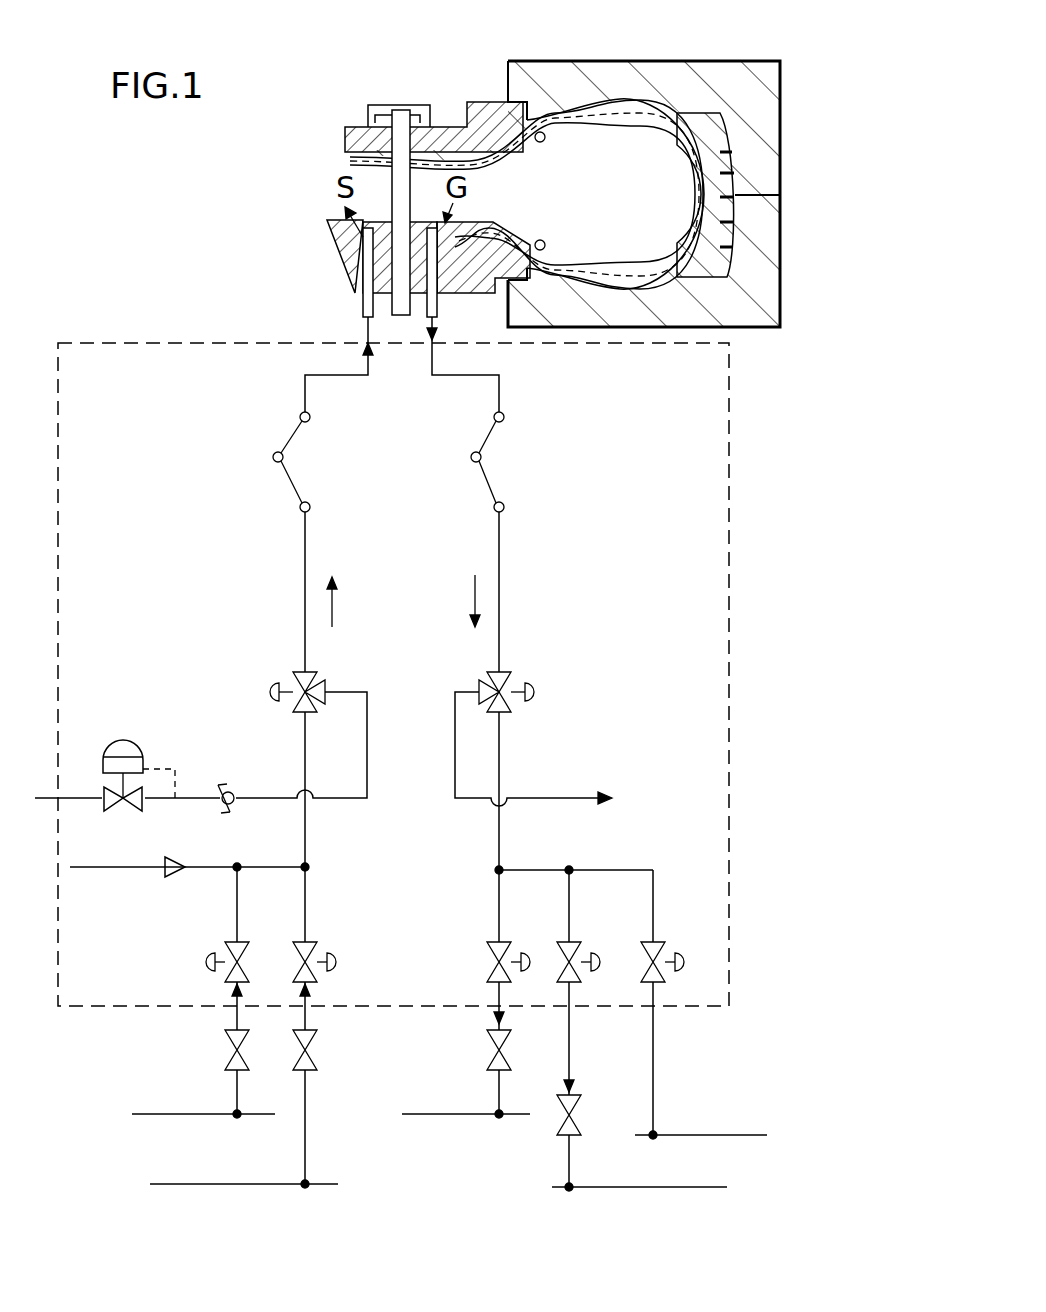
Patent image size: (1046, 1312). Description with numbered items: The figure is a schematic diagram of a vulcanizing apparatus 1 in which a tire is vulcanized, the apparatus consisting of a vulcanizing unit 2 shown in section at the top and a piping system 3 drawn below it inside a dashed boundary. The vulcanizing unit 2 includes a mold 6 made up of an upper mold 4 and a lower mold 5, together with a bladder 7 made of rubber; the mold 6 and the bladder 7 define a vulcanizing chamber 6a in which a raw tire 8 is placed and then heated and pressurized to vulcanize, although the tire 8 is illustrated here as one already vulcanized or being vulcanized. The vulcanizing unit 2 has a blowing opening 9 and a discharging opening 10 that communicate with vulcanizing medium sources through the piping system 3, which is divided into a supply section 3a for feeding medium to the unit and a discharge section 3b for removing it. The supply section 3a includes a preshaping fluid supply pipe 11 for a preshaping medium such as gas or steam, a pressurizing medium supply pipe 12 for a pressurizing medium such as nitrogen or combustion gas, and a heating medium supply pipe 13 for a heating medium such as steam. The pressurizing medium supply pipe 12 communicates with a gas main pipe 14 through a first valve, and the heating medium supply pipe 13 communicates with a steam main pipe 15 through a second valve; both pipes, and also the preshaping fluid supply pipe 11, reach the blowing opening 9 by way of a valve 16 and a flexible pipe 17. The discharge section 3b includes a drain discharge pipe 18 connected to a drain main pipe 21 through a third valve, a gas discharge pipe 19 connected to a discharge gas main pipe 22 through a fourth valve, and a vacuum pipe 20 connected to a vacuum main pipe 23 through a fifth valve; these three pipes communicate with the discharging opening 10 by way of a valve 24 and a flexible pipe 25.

The vulcanizing apparatus 1 is at (452, 102).
The vulcanizing unit 2 is at (367, 110).
The piping system 3 is at (730, 498).
The supply section 3a is at (297, 575).
The discharge section 3b is at (498, 568).
The upper mold 4 is at (762, 143).
The lower mold 5 is at (762, 250).
The mold 6 is at (616, 217).
The vulcanizing chamber 6a is at (700, 235).
The bladder 7 is at (633, 110).
The raw tire 8 is at (695, 120).
The blowing opening 9 is at (352, 265).
The discharging opening 10 is at (442, 280).
The preshaping fluid supply pipe 11 is at (263, 798).
The pressurizing medium supply pipe 12 is at (237, 920).
The heating medium supply pipe 13 is at (305, 920).
The gas main pipe 14 is at (152, 1114).
The steam main pipe 15 is at (205, 1184).
The valve 16 is at (278, 668).
The flexible pipe 17 is at (278, 449).
The drain discharge pipe 18 is at (499, 920).
The gas discharge pipe 19 is at (569, 920).
The vacuum pipe 20 is at (653, 920).
The drain main pipe 21 is at (432, 1114).
The discharge gas main pipe 22 is at (620, 1185).
The vacuum main pipe 23 is at (710, 1135).
The valve 24 is at (517, 672).
The flexible pipe 25 is at (485, 442).